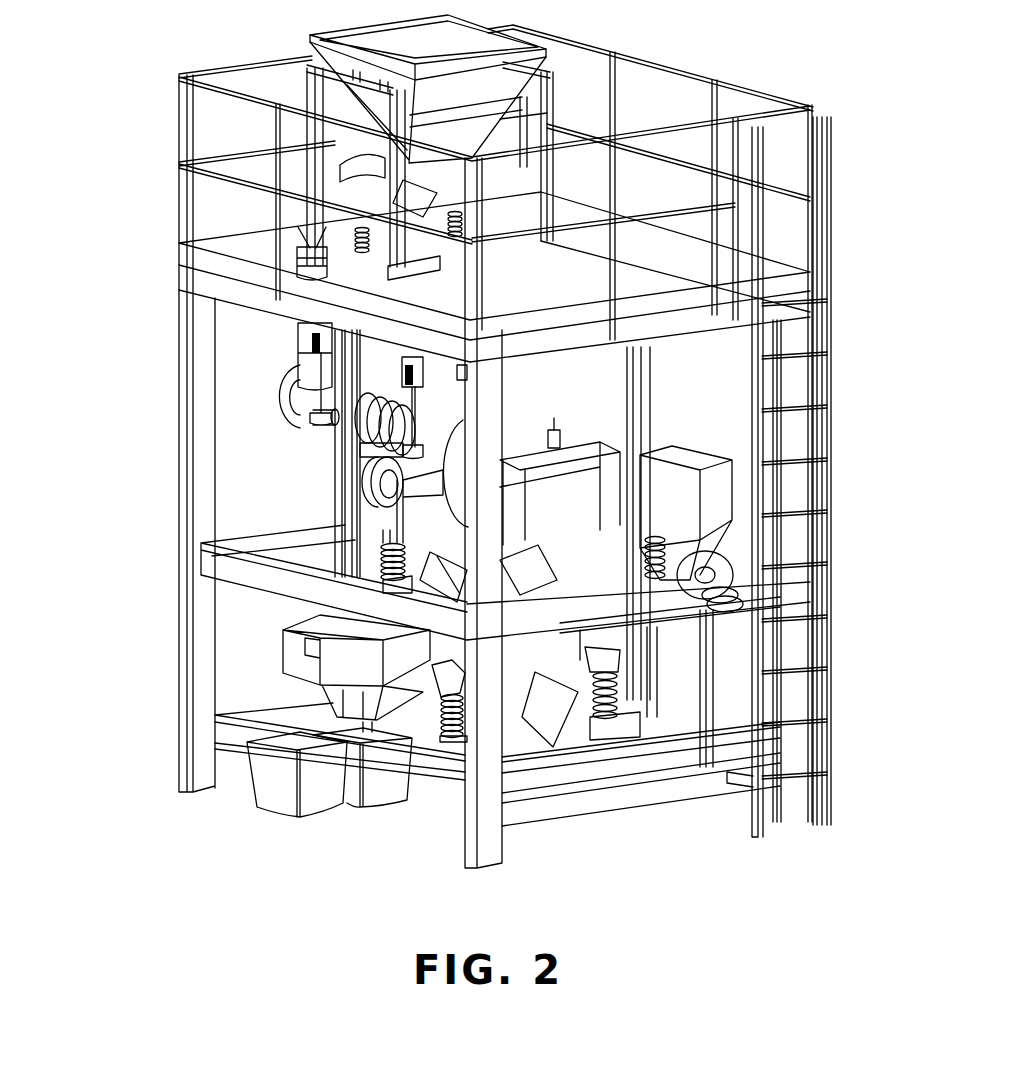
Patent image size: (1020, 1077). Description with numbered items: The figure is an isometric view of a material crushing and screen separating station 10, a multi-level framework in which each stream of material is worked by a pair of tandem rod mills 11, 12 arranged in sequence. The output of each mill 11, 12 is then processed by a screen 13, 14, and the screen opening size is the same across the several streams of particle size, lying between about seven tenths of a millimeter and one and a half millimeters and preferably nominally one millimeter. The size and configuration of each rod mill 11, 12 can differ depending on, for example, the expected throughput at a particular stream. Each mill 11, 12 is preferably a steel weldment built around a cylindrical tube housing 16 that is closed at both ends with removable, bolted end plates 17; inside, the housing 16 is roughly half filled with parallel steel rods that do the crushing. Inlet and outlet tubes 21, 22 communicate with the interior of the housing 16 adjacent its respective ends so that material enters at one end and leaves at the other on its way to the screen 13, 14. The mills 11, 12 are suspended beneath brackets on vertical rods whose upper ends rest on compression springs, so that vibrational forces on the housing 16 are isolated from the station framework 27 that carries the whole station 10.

The crushing and separating station 10 is at (128, 186).
The rod mill 11 is at (292, 410).
The rod mill 12 is at (720, 566).
The screen 13 is at (667, 494).
The screen 14 is at (562, 657).
The cylindrical tube housing 16 is at (397, 435).
The end plate 17 is at (383, 547).
The inlet tube 21 is at (280, 392).
The outlet tube 22 is at (458, 478).
The station framework 27 is at (178, 723).